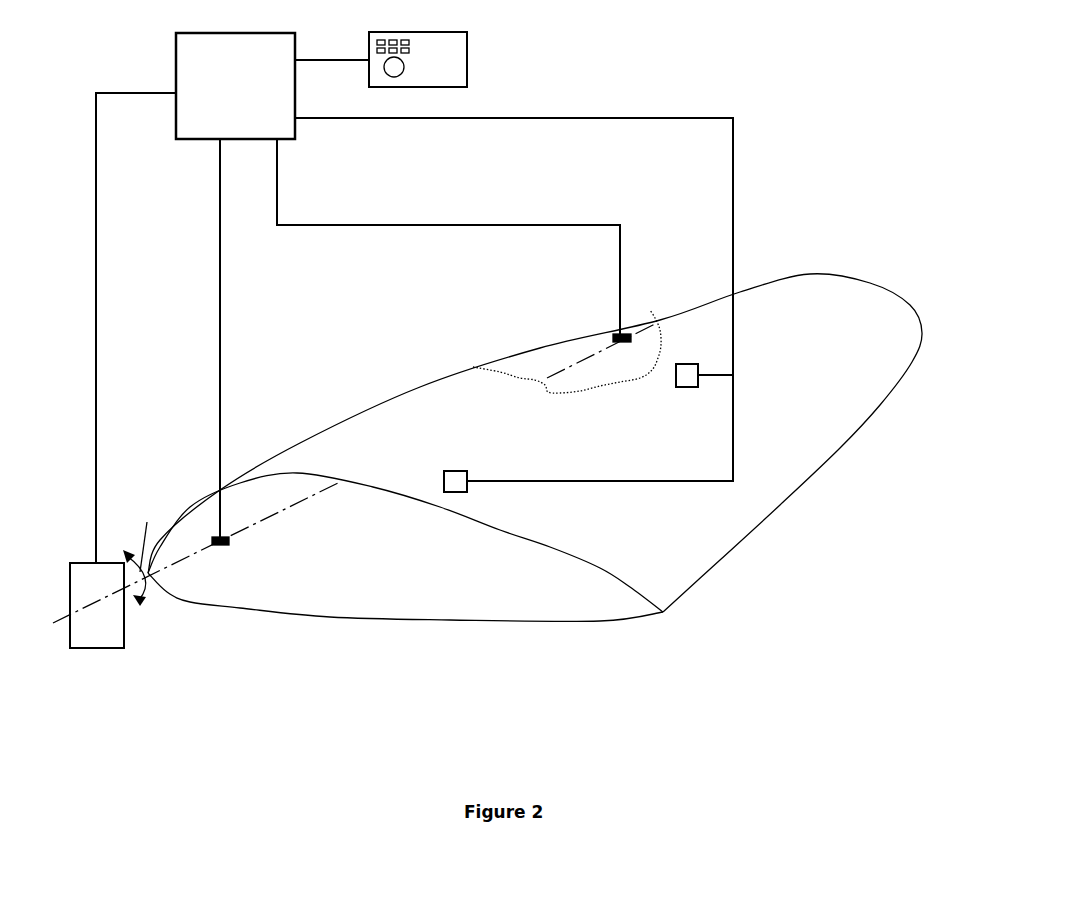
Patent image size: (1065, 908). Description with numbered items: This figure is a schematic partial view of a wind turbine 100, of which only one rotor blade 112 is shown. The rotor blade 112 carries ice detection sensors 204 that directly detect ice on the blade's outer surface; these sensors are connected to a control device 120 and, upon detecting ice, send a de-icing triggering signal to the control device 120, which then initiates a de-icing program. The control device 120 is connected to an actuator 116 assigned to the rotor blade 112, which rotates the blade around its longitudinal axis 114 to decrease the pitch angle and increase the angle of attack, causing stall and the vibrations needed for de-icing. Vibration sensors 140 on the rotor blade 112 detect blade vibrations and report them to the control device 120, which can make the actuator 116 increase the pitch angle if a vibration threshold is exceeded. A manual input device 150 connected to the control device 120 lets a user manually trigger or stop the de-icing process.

The wind turbine 100 is at (706, 94).
The rotor blade 112 is at (722, 557).
The longitudinal axis 114 is at (572, 365).
The actuator 116 is at (102, 641).
The control device 120 is at (252, 98).
The vibration sensor 140 is at (691, 364).
The manual input device 150 is at (455, 43).
The ice detection sensor 204 is at (606, 332).